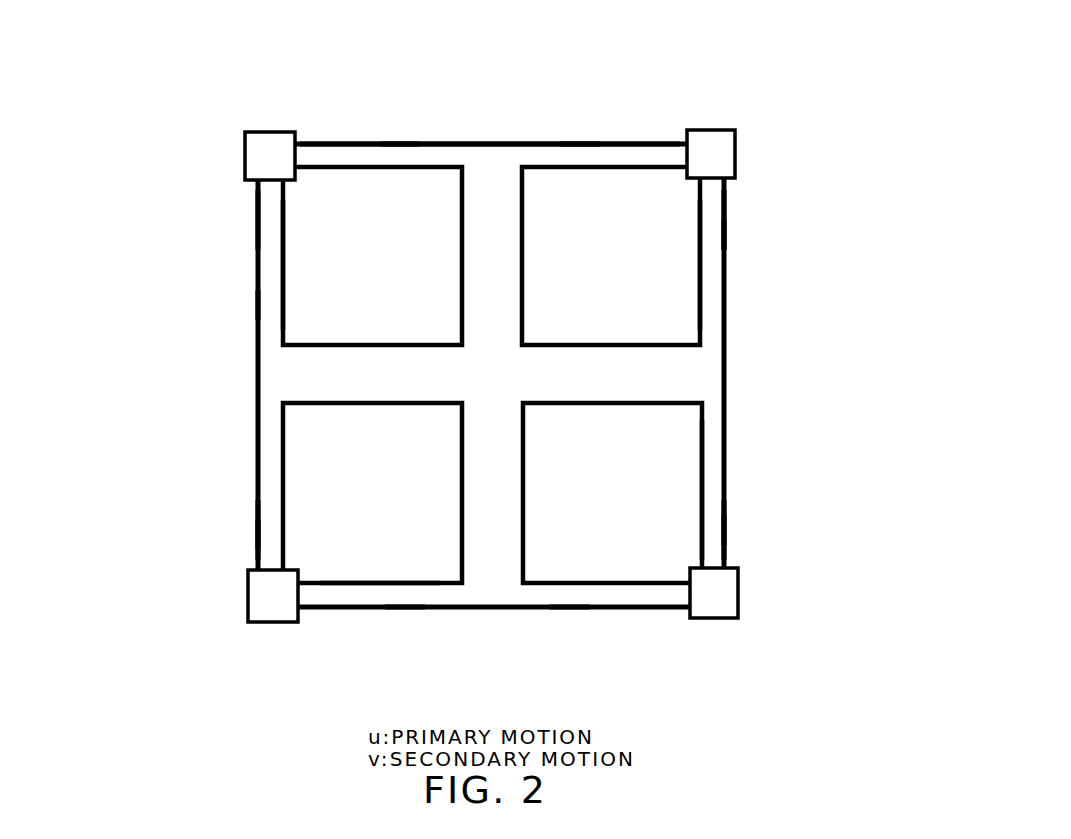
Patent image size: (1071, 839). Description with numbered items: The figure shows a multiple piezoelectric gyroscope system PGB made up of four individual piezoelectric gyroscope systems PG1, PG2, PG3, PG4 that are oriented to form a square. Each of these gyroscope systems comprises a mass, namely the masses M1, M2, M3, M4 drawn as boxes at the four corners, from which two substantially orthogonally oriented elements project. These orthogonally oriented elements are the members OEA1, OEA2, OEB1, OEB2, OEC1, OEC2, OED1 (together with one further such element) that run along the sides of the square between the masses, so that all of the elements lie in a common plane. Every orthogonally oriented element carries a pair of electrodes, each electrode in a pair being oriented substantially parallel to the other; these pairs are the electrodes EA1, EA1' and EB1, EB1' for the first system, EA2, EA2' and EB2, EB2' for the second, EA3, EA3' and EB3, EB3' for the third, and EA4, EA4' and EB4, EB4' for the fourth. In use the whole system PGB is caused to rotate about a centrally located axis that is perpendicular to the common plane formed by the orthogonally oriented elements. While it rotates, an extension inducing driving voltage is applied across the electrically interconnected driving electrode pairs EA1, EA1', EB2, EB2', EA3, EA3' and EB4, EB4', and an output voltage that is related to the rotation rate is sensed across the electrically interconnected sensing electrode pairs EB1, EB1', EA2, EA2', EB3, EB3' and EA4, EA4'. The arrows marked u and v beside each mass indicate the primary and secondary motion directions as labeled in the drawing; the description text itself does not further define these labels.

The mass M1 is at (247, 125).
The mass M2 is at (734, 124).
The mass M3 is at (736, 627).
The mass M4 is at (251, 631).
The electrode EA1 is at (389, 122).
The electrode EA1' is at (372, 256).
The electrode EB1 is at (206, 277).
The electrode EB1' is at (333, 265).
The electrode EA2 is at (770, 275).
The electrode EA2' is at (645, 265).
The electrode EB2 is at (589, 121).
The electrode EB2' is at (611, 256).
The electrode EA3 is at (594, 628).
The electrode EA3' is at (612, 493).
The electrode EB3 is at (771, 470).
The electrode EB3' is at (647, 490).
The electrode EA4 is at (208, 472).
The electrode EA4' is at (372, 493).
The electrode EB4 is at (394, 630).
The electrode EB4' is at (366, 558).
The piezoelectric gyroscope system PG1 is at (158, 243).
The piezoelectric gyroscope system PG2 is at (831, 234).
The piezoelectric gyroscope system PG3 is at (834, 517).
The piezoelectric gyroscope system PG4 is at (150, 490).
The multiple piezoelectric gyroscope system PGB is at (808, 58).
The orthogonally oriented element OEA1 is at (399, 121).
The orthogonally oriented element OEA2 is at (255, 306).
The orthogonally oriented element OEB1 is at (582, 121).
The orthogonally oriented element OEB2 is at (743, 231).
The orthogonally oriented element OEC1 is at (729, 529).
The orthogonally oriented element OEC2 is at (257, 533).
The orthogonally oriented element OED1 is at (403, 621).
The primary motion u is at (230, 155).
The secondary motion v is at (270, 117).